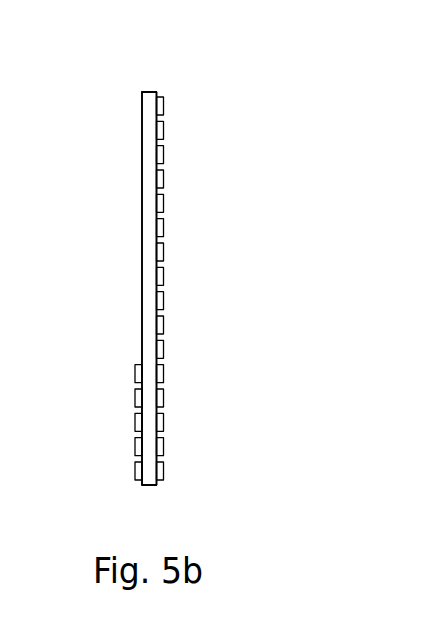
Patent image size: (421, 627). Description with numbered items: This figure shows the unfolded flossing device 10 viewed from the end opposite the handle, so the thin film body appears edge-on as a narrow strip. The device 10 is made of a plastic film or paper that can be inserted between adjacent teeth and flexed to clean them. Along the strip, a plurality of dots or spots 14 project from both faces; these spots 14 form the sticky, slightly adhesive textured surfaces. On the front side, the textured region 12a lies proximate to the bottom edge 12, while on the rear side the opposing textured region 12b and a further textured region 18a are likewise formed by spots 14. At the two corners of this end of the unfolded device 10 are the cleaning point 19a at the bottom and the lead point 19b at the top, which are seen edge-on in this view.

The flossing device 10 is at (224, 117).
The bottom edge 12 is at (156, 485).
The region 12a is at (95, 147).
The region 12b is at (237, 347).
The spots 14 is at (164, 402).
The region 18a is at (237, 227).
The cleaning point 19a is at (142, 485).
The lead point 19b is at (142, 91).